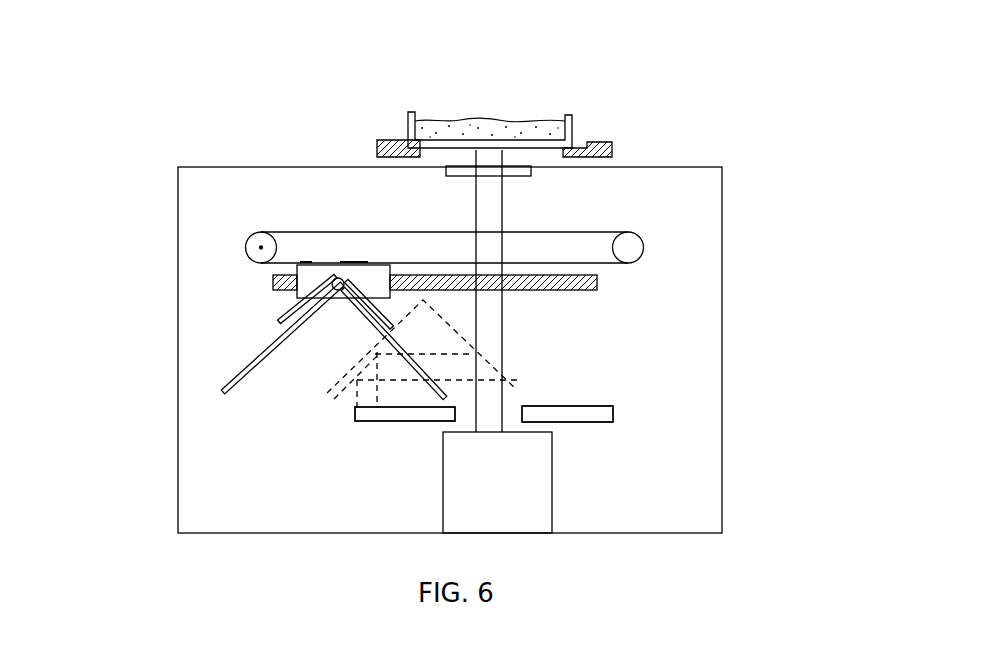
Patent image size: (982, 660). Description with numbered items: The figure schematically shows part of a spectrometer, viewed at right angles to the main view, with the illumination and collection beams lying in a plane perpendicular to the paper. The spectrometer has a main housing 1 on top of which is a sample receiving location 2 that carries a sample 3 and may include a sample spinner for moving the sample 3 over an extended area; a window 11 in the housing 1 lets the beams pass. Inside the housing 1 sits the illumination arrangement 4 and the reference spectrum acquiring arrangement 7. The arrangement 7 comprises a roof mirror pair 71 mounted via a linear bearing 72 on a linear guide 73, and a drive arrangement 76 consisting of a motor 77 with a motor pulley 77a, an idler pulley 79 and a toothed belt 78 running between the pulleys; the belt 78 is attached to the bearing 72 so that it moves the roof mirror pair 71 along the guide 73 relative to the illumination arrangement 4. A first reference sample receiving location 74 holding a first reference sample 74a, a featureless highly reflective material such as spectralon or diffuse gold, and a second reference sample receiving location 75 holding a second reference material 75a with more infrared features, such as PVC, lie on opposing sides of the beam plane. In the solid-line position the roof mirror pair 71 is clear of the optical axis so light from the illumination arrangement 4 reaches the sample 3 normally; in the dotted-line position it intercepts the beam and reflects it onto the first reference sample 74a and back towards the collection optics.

The main housing 1 is at (177, 202).
The sample receiving location 2 is at (403, 155).
The sample 3 is at (523, 130).
The illumination arrangement 4 is at (525, 512).
The reference spectrum acquiring arrangement 7 is at (218, 313).
The window 11 is at (447, 170).
The roof mirror pair 71 is at (258, 358).
The linear bearing 72 is at (273, 276).
The linear guide 73 is at (597, 282).
The first reference sample receiving location 74 is at (373, 423).
The first reference sample 74a is at (355, 417).
The second reference sample receiving location 75 is at (573, 423).
The second reference material 75a is at (613, 415).
The drive arrangement 76 is at (246, 219).
The motor 77 is at (236, 242).
The motor pulley 77a is at (247, 250).
The toothed belt 78 is at (597, 233).
The idler pulley 79 is at (635, 248).